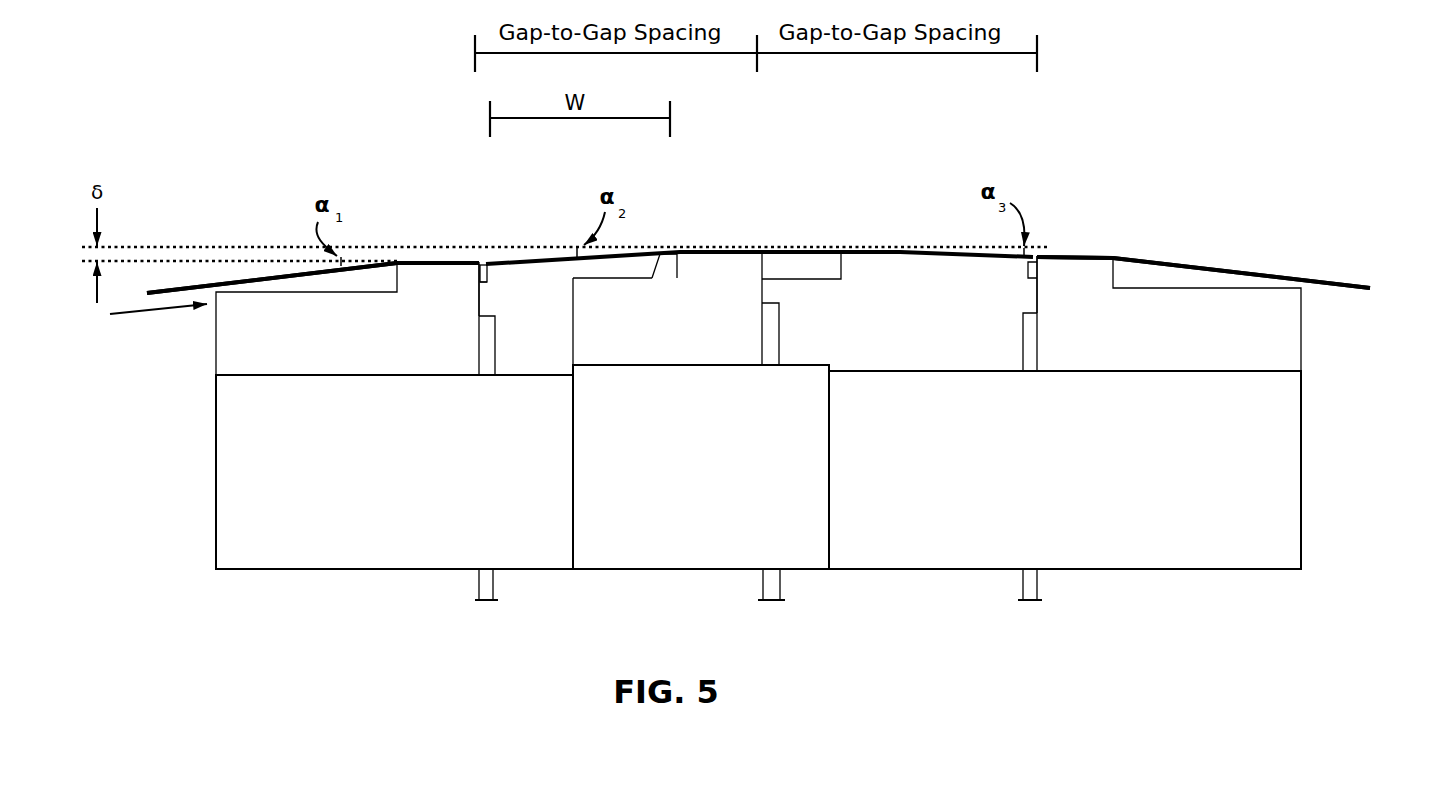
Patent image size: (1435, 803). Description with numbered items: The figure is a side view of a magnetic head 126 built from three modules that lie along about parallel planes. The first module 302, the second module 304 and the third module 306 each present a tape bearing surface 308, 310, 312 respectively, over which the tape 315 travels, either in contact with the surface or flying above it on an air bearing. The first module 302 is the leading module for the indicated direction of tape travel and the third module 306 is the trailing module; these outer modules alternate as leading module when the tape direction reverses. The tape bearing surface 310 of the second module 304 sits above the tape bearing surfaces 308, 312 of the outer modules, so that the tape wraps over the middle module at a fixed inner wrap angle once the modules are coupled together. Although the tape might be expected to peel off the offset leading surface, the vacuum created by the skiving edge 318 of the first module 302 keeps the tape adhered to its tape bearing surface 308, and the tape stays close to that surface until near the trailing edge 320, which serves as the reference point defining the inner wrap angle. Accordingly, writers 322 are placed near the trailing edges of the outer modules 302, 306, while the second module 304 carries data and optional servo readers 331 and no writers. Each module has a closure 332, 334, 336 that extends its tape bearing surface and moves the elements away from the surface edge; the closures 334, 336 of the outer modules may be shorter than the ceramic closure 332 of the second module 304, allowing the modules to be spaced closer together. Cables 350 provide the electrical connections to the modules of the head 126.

The magnetic head 126 is at (385, 132).
The first module 302 is at (215, 341).
The second module 304 is at (660, 255).
The third module 306 is at (1303, 337).
The tape bearing surface 308 is at (448, 256).
The tape bearing surface 310 is at (707, 250).
The tape bearing surface 312 is at (1066, 256).
The tape 315 is at (1167, 262).
The skiving edge 318 is at (388, 272).
The trailing edge 320 is at (491, 267).
The writers 322 is at (481, 258).
The data and optional servo readers 331 is at (762, 250).
The closure 332 is at (808, 279).
The closure 334 is at (492, 278).
The closure 336 is at (1027, 268).
The cables 350 is at (493, 587).